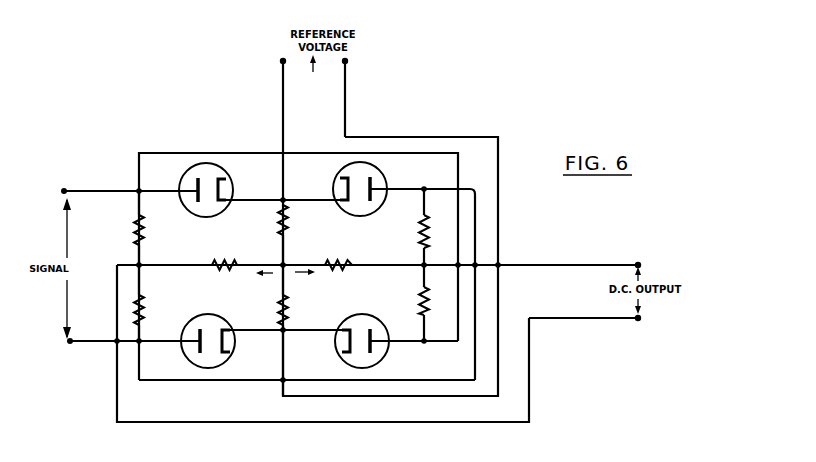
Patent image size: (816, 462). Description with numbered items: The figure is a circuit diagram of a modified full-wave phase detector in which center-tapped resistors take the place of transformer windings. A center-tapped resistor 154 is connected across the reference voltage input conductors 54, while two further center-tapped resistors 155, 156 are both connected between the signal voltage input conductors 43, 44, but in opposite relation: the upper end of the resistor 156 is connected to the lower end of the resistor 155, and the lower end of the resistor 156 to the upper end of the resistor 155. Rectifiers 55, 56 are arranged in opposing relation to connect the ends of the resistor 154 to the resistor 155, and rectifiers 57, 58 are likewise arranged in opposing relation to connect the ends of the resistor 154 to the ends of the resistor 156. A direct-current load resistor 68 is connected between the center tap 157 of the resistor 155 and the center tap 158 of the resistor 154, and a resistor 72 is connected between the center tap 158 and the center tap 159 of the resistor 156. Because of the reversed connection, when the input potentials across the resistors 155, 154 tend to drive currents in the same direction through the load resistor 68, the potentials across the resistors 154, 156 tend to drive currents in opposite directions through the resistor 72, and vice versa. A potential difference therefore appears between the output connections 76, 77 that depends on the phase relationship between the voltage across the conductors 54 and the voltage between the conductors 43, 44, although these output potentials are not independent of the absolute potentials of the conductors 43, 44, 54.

The signal voltage input conductor 43 is at (86, 190).
The signal voltage input conductor 44 is at (74, 344).
The reference voltage input conductors 54 is at (345, 95).
The rectifier 55 is at (229, 178).
The rectifier 56 is at (223, 318).
The rectifier 57 is at (386, 177).
The rectifier 58 is at (371, 315).
The direct-current load resistor 68 is at (224, 262).
The resistor 72 is at (338, 262).
The output connection 76 is at (537, 263).
The output connection 77 is at (560, 320).
The center-tapped resistor 154 is at (296, 250).
The center-tapped resistor 155 is at (152, 252).
The center-tapped resistor 156 is at (411, 256).
The center tap 157 is at (145, 270).
The center tap 158 is at (281, 262).
The center tap 159 is at (421, 272).